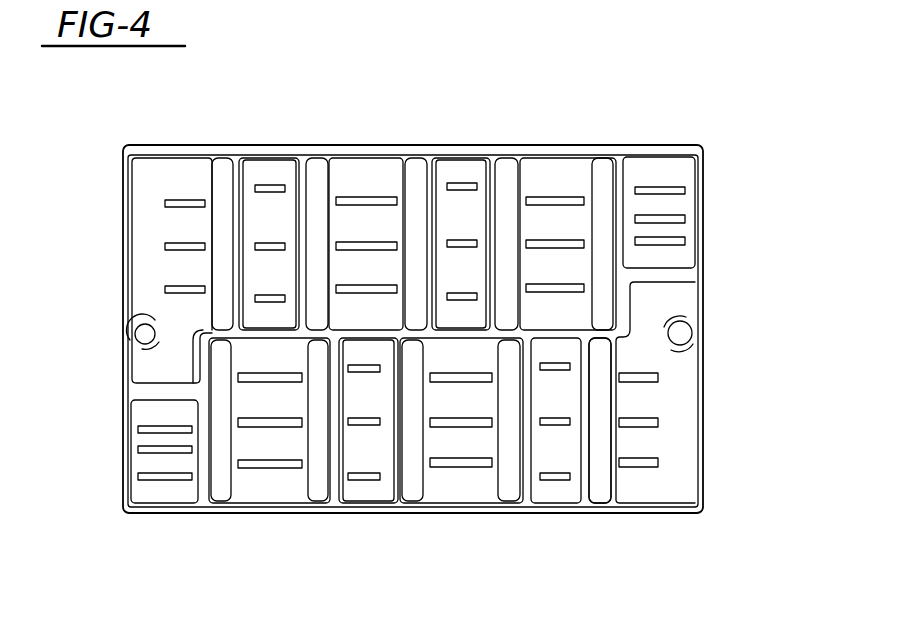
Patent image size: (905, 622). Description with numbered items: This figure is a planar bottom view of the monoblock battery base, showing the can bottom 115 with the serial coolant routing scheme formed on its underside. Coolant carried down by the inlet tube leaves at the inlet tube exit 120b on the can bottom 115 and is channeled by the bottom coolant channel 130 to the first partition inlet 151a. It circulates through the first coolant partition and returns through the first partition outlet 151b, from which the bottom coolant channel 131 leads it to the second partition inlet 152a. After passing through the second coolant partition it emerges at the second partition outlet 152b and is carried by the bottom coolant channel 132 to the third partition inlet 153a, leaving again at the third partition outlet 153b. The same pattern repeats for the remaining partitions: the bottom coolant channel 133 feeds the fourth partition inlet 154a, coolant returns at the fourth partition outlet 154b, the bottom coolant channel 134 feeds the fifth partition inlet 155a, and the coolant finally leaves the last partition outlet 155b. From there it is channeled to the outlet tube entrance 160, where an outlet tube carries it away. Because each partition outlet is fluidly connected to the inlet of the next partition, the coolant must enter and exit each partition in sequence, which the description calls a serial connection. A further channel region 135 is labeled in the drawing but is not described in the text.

The can bottom 115 is at (731, 128).
The bottom coolant channel 130 is at (163, 172).
The inlet tube exit 120b is at (128, 335).
The first partition inlet 151a is at (224, 175).
The second partition outlet 152b is at (319, 128).
The bottom coolant channel 132 is at (368, 170).
The third partition inlet 153a is at (414, 173).
The fourth partition outlet 154b is at (508, 178).
The bottom coolant channel 134 is at (560, 166).
The fifth partition inlet 155a is at (609, 176).
The outlet tube entrance 160 is at (724, 326).
The compartment 135 is at (680, 461).
The first partition outlet 151b is at (220, 503).
The bottom coolant channel 131 is at (267, 503).
The second partition inlet 152a is at (319, 532).
The third partition outlet 153b is at (410, 503).
The bottom coolant channel 133 is at (473, 503).
The fourth partition inlet 154a is at (513, 503).
The last partition outlet 155b is at (602, 503).